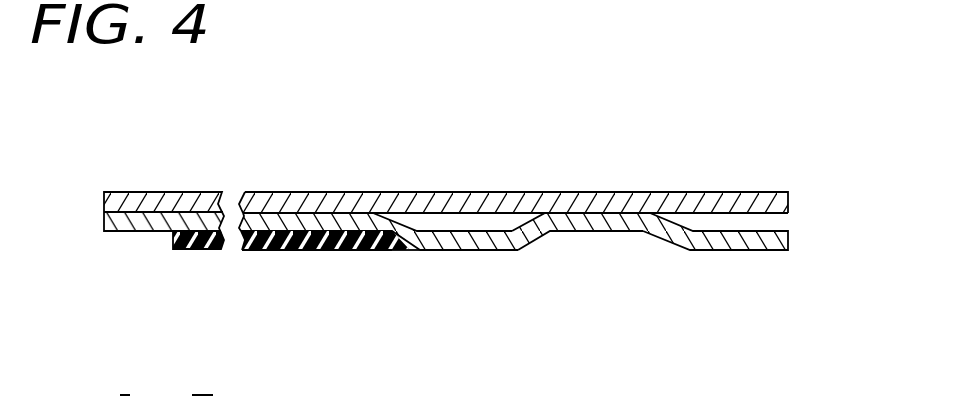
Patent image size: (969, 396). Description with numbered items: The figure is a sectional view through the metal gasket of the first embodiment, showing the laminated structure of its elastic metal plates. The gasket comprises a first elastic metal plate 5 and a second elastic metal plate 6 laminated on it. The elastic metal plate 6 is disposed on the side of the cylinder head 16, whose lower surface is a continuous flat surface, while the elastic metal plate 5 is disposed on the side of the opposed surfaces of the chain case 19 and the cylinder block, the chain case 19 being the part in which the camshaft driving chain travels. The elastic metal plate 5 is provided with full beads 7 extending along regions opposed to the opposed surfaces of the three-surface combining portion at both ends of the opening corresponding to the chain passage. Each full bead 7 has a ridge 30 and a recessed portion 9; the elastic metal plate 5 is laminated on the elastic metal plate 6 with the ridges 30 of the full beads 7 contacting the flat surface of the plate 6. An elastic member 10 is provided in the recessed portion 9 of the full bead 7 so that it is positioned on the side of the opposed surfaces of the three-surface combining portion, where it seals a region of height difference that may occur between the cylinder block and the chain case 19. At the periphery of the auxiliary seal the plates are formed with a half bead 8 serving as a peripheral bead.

The ridge 30 is at (290, 213).
The elastic metal plate 6 is at (687, 205).
The full bead 7 is at (313, 222).
The half bead 8 is at (531, 232).
The elastic metal plate 5 is at (710, 242).
The recessed portion 9 is at (313, 250).
The elastic member 10 is at (295, 240).
The cylinder head 16 is at (388, 188).
The chain case 19 is at (408, 258).